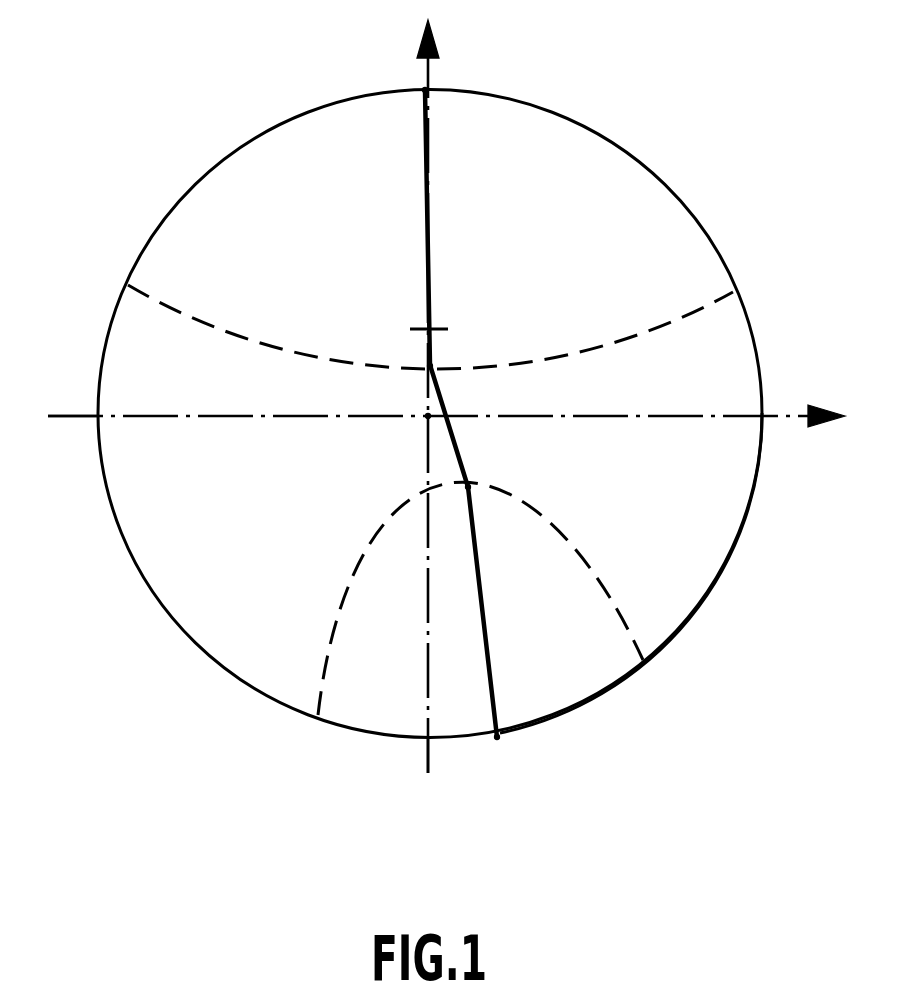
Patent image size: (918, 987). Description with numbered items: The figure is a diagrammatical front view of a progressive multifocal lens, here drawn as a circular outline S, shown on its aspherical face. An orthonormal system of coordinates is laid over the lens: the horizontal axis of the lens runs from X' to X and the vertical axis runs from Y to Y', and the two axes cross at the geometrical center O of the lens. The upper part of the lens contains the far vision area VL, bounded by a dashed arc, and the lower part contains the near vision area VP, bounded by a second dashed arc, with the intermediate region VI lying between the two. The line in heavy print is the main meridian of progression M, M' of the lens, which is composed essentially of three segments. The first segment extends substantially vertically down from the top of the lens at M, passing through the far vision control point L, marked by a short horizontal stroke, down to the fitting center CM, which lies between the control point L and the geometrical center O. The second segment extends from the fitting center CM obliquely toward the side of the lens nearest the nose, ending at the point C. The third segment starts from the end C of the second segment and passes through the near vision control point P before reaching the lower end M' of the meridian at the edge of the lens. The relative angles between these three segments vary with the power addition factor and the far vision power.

The sphere S is at (206, 519).
The intermediate region VI is at (693, 488).
The x-axis X is at (446, 444).
The X' axis end X' is at (60, 445).
The y-axis Y is at (440, 396).
The Y' axis end Y' is at (456, 767).
The far vision area VL is at (660, 262).
The near vision area VP is at (583, 643).
The near vision control point P is at (473, 547).
The main meridian of progression M is at (479, 71).
The main meridian of progression M' is at (553, 763).
The far vision control point L is at (436, 328).
The fitting center CM is at (432, 365).
The geometrical center O is at (428, 416).
The end of the second segment C is at (470, 485).